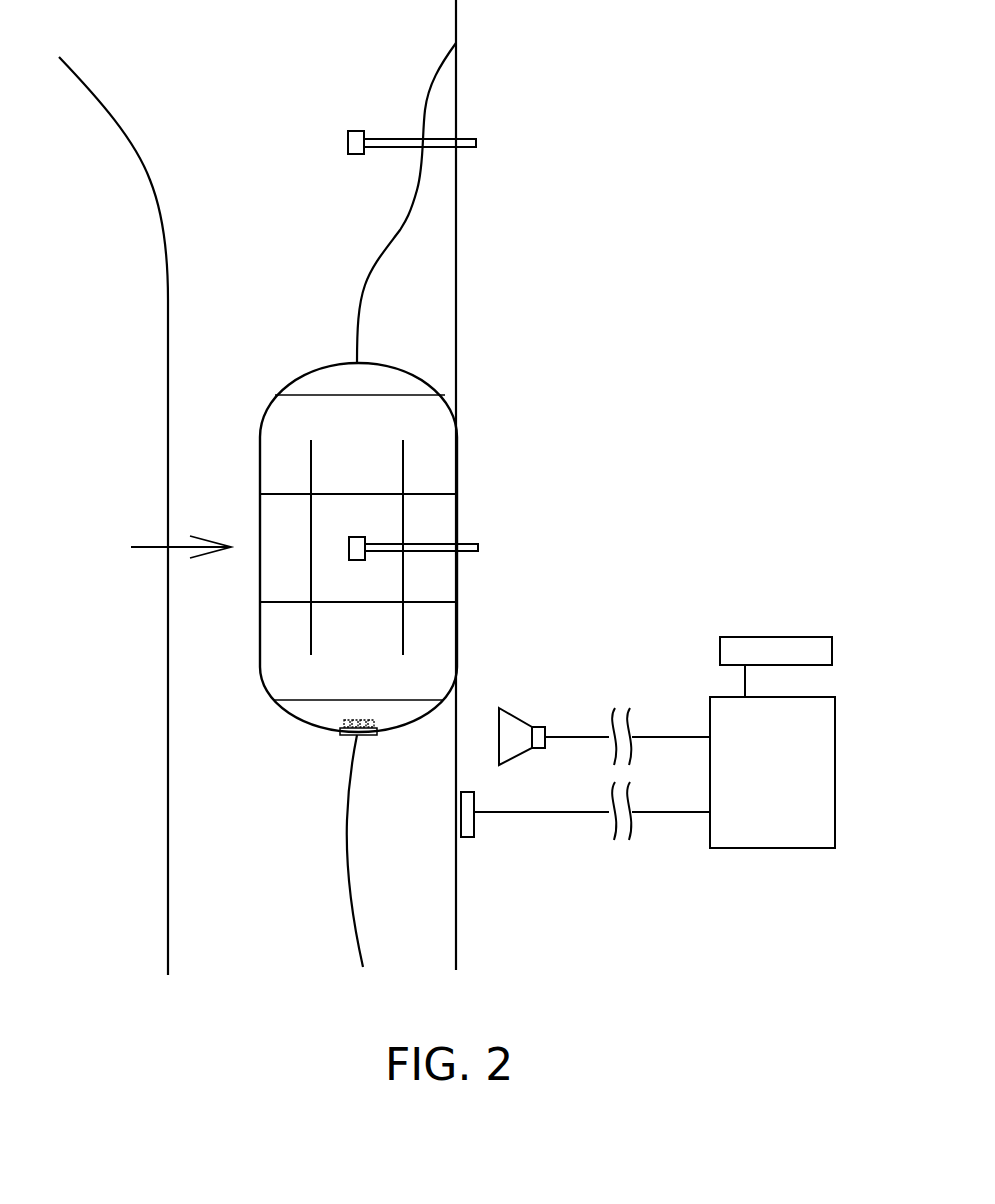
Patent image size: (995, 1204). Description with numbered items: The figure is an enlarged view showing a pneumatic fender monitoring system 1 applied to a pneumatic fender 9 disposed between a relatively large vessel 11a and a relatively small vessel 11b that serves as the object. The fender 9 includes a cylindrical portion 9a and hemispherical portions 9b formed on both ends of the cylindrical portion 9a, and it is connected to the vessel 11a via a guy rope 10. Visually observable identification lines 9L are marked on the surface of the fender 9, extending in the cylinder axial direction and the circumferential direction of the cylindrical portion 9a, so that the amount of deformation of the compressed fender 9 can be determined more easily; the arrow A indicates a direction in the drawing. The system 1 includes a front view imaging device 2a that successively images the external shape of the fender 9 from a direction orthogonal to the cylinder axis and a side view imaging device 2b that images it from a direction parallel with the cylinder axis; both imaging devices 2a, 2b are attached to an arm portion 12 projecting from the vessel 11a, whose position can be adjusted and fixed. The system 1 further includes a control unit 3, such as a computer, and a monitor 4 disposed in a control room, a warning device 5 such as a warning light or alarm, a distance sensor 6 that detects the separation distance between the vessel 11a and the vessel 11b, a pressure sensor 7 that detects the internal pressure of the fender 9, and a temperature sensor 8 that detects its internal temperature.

The pneumatic fender monitoring system 1 is at (652, 455).
The front view imaging device 2a is at (352, 538).
The side view imaging device 2b is at (351, 130).
The control unit 3 is at (723, 710).
The monitor 4 is at (755, 645).
The warning device 5 is at (517, 727).
The distance sensor 6 is at (479, 826).
The pressure sensor 7 is at (368, 740).
The temperature sensor 8 is at (347, 740).
The pneumatic fender 9 is at (264, 418).
The cylindrical portion 9a is at (438, 518).
The hemispherical portions 9b is at (385, 377).
The identification lines 9L is at (410, 394).
The guy rope 10 is at (355, 328).
The vessel 11a is at (473, 235).
The vessel 11b is at (130, 188).
The arm portion 12 is at (438, 140).
The flow direction A is at (171, 551).